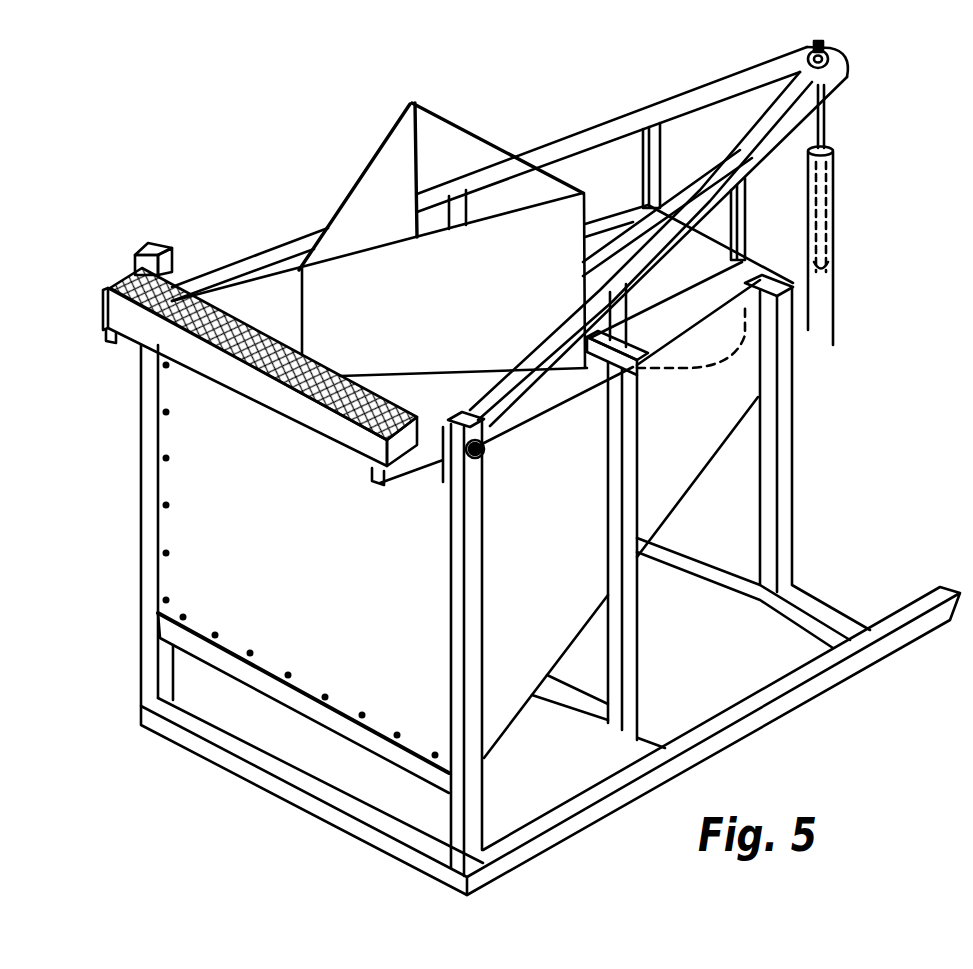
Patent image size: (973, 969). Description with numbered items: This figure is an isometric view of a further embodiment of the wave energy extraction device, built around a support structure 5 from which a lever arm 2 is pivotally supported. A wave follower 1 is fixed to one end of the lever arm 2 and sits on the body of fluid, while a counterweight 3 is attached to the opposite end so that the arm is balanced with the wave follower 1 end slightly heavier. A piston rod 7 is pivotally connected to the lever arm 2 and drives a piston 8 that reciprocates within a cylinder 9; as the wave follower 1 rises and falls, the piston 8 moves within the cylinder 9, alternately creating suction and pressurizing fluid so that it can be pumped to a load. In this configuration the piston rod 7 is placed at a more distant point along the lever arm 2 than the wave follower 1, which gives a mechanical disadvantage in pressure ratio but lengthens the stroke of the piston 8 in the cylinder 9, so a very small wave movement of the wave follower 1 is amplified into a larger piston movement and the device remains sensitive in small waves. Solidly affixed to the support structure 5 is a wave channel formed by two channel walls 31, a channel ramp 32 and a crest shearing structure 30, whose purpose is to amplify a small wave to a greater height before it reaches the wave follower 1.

The wave follower 1 is at (680, 283).
The lever arm 2 is at (573, 137).
The counterweight 3 is at (300, 412).
The support structure 5 is at (794, 518).
The piston rod 7 is at (821, 130).
The piston 8 is at (813, 261).
The cylinder 9 is at (834, 207).
The crest shearing structure 30 is at (362, 178).
The channel walls 31 is at (663, 493).
The channel ramp 32 is at (325, 672).